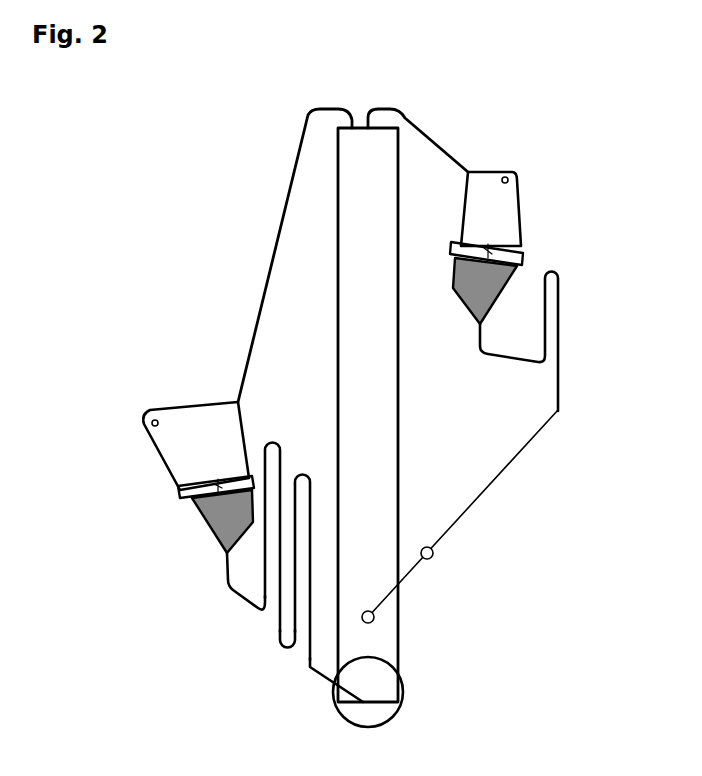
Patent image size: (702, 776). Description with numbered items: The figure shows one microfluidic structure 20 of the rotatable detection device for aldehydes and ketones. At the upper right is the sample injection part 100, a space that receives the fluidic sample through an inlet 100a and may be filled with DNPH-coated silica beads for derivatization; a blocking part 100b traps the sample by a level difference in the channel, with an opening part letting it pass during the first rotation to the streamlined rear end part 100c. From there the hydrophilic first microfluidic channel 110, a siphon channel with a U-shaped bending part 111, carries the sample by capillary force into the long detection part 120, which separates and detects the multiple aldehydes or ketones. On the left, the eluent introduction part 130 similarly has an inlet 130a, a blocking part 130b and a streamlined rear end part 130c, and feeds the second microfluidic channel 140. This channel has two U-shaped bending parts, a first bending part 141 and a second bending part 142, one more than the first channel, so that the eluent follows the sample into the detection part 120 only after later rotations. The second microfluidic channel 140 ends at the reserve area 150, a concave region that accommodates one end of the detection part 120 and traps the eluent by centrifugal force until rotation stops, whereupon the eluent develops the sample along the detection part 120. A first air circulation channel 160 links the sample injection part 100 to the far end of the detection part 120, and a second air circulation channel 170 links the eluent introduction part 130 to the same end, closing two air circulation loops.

The microfluidic structure 20 is at (195, 189).
The sample injection part 100 is at (541, 254).
The inlet 100a is at (513, 176).
The blocking part 100b is at (521, 257).
The rear end part of the sample injection part 100c is at (457, 297).
The first microfluidic channel 110 is at (560, 412).
The bending part 111 is at (560, 272).
The detection part 120 is at (377, 382).
The eluent introduction part 130 is at (152, 469).
The inlet 130a is at (153, 420).
The blocking part 130b is at (178, 490).
The rear end part of the eluent introduction part 130c is at (224, 551).
The second microfluidic channel 140 is at (272, 576).
The first bending part 141 is at (272, 443).
The second bending part 142 is at (302, 475).
The reserve area 150 is at (400, 718).
The first air circulation channel 160 is at (436, 148).
The second air circulation channel 170 is at (274, 256).